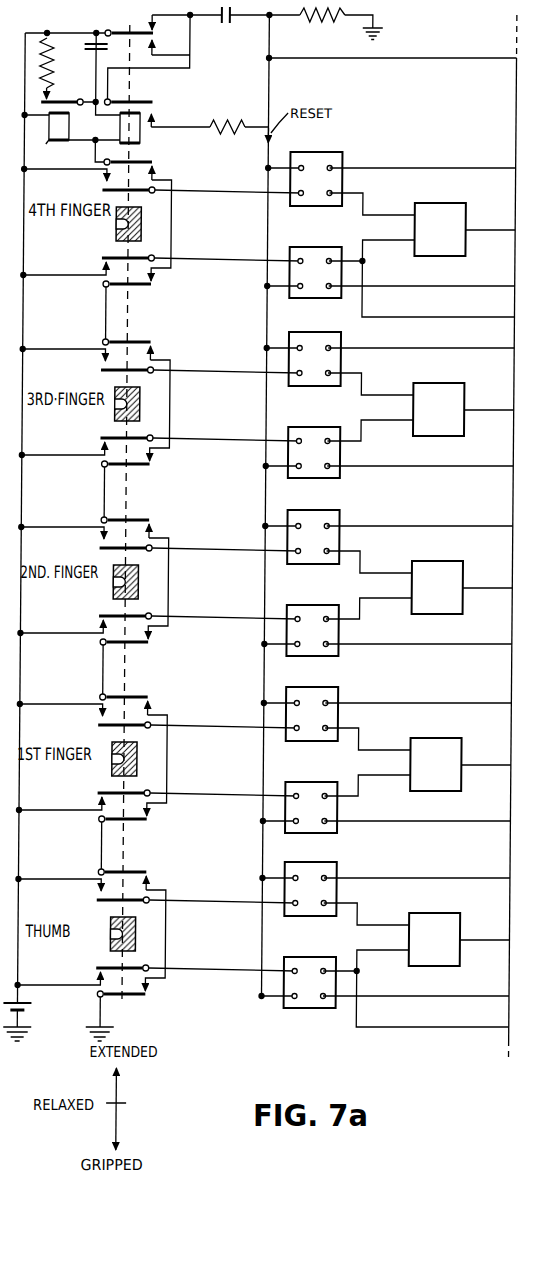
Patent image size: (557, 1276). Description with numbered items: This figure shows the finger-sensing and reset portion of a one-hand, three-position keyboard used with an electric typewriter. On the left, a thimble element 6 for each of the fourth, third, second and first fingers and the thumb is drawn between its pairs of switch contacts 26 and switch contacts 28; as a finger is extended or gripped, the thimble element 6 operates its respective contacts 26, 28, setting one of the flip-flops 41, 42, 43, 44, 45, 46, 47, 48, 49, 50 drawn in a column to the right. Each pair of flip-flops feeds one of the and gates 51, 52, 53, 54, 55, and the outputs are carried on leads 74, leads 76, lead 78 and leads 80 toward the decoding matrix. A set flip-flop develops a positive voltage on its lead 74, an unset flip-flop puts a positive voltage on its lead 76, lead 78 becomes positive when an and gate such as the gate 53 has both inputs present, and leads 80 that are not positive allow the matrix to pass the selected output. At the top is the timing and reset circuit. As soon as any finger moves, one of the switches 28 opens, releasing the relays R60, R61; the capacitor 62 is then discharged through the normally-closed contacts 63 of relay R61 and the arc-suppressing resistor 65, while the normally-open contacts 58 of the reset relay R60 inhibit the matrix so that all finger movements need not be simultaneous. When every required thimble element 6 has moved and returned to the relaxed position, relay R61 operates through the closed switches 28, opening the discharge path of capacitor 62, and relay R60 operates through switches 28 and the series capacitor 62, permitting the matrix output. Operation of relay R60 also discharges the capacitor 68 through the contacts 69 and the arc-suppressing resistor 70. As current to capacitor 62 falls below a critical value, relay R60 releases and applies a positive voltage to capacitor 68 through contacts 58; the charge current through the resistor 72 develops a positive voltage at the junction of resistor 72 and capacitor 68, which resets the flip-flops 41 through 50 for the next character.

The normally-open contacts 58 is at (150, 30).
The capacitor 62 is at (84, 48).
The arc-suppressing resistor 65 is at (53, 64).
The normally-closed contacts 63 is at (50, 101).
The capacitor 68 is at (232, 24).
The resistor 72 is at (299, 20).
The contacts 69 is at (152, 102).
The arc-suppressing resistor 70 is at (228, 124).
The relay R61 is at (52, 140).
The reset relay R60 is at (141, 141).
The switch contacts 28 is at (153, 162).
The switch contacts 26 is at (104, 190).
The thimble element 6 is at (143, 222).
The flip-flop 41 is at (344, 153).
The flip-flop 42 is at (327, 247).
The flip-flop 43 is at (331, 333).
The flip-flop 44 is at (324, 427).
The flip-flop 45 is at (329, 511).
The flip-flop 46 is at (325, 605).
The flip-flop 47 is at (327, 696).
The flip-flop 48 is at (323, 782).
The flip-flop 49 is at (329, 859).
The flip-flop 50 is at (320, 957).
The and gate 51 is at (468, 213).
The and gate 52 is at (461, 383).
The and gate 53 is at (456, 561).
The and gate 54 is at (457, 738).
The and gate 55 is at (453, 913).
The lead 74 is at (466, 168).
The lead 76 is at (378, 241).
The lead 78 is at (478, 588).
The lead 80 is at (401, 213).